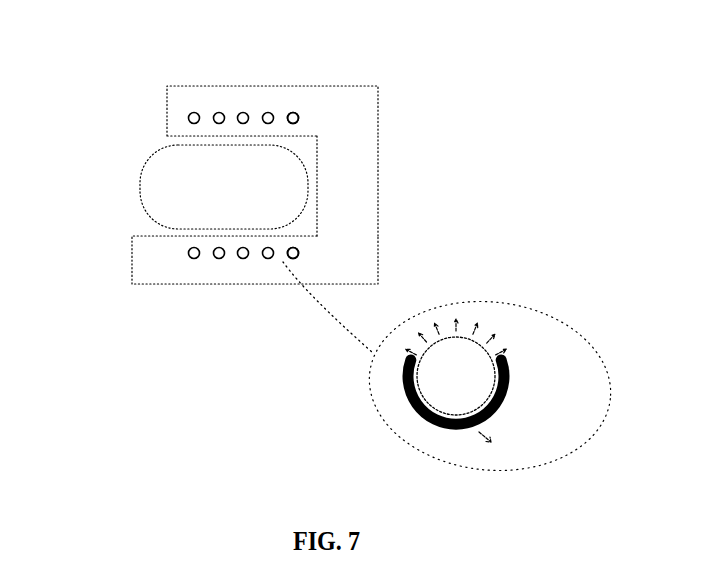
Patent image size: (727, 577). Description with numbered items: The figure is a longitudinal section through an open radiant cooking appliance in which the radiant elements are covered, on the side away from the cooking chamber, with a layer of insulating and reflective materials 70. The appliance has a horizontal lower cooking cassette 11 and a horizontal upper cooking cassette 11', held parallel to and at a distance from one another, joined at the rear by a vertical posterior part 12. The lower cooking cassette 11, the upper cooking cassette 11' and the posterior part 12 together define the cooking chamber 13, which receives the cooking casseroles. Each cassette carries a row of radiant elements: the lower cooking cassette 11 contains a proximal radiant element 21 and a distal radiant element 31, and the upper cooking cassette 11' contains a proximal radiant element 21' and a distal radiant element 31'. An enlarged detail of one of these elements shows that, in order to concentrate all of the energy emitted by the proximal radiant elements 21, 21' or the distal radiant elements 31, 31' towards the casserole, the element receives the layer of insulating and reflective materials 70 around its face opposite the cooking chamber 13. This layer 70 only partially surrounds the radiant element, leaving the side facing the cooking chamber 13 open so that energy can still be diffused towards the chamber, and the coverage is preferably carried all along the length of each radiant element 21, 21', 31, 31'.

The lower cooking cassette 11 is at (255, 325).
The upper cooking cassette 11' is at (272, 80).
The posterior part 12 is at (362, 194).
The cooking chamber 13 is at (195, 187).
The proximal radiant element 21 is at (373, 287).
The proximal radiant element 21' is at (378, 136).
The distal radiant element 31 is at (228, 309).
The distal radiant element 31' is at (244, 79).
The layer of insulating and reflective materials 70 is at (510, 388).